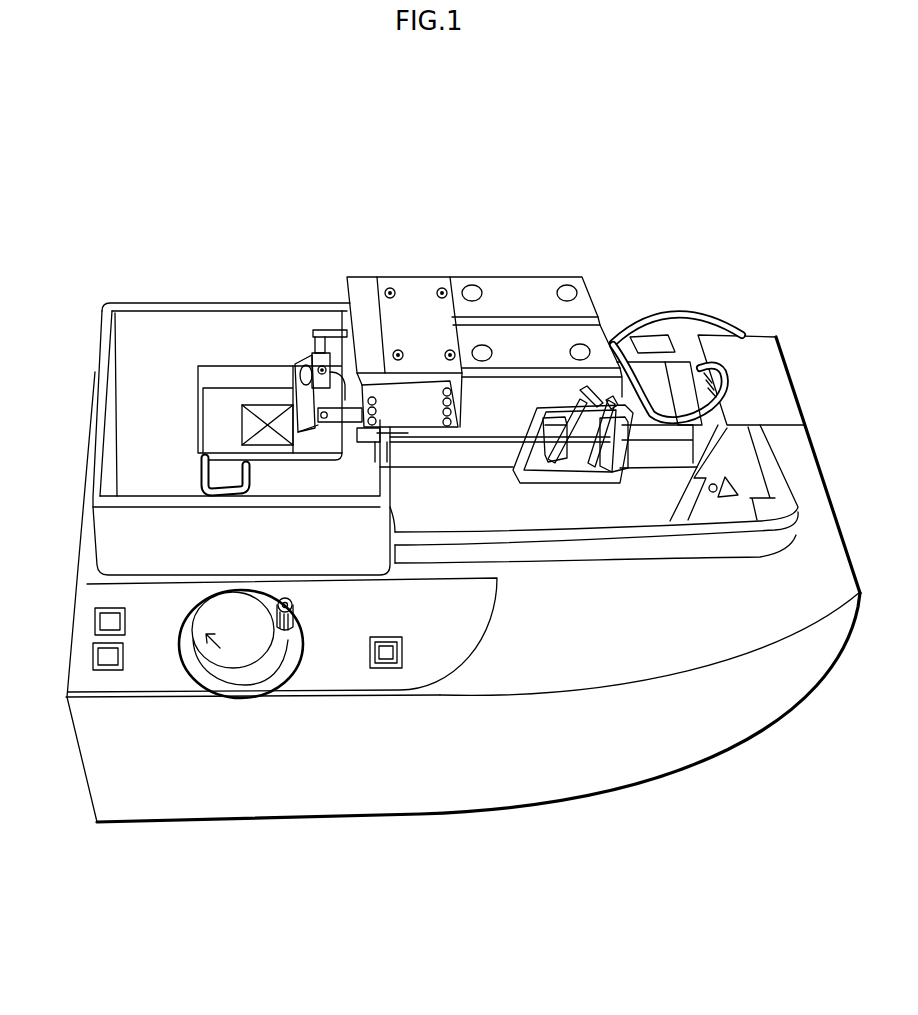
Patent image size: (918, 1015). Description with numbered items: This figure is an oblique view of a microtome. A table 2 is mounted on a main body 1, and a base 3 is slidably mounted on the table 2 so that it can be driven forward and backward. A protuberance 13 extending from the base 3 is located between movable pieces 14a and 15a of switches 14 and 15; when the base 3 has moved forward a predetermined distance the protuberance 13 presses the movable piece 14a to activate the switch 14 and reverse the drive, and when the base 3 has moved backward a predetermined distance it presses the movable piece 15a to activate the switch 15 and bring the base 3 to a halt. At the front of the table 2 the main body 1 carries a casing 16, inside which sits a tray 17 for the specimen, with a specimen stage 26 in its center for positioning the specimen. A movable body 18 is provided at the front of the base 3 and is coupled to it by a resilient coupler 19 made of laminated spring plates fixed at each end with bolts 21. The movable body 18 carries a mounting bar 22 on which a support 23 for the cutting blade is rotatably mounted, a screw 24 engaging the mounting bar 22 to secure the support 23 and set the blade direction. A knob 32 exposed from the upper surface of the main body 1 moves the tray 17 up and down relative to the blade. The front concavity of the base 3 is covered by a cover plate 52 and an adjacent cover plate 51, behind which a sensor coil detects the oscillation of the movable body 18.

The main body 1 is at (592, 680).
The table 2 is at (658, 357).
The base 3 is at (503, 283).
The protuberance 13 is at (537, 472).
The switch 14 is at (563, 467).
The movable piece 14a is at (598, 478).
The switch 15 is at (700, 478).
The movable piece 15a is at (625, 478).
The casing 16 is at (132, 378).
The tray 17 is at (223, 407).
The movable body 18 is at (318, 336).
The resilient coupler 19 is at (430, 393).
The bolt 21 is at (365, 435).
The mounting bar 22 is at (322, 318).
The support 23 is at (302, 364).
The screw 24 is at (312, 350).
The specimen stage 26 is at (262, 413).
The knob 32 is at (255, 653).
The cover plate 51 is at (428, 282).
The cover plate 52 is at (358, 282).